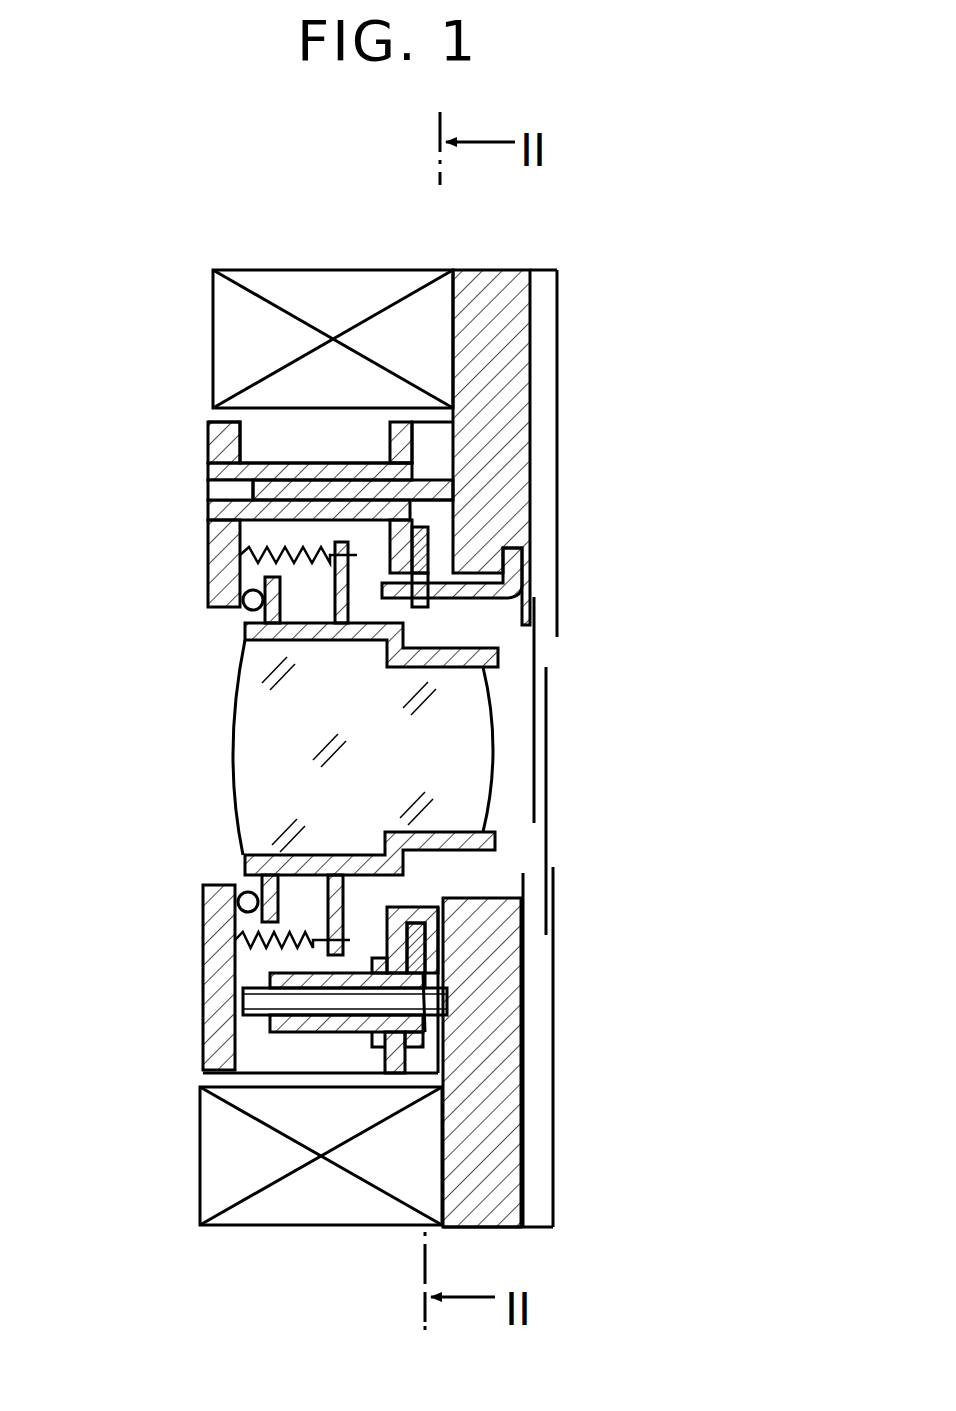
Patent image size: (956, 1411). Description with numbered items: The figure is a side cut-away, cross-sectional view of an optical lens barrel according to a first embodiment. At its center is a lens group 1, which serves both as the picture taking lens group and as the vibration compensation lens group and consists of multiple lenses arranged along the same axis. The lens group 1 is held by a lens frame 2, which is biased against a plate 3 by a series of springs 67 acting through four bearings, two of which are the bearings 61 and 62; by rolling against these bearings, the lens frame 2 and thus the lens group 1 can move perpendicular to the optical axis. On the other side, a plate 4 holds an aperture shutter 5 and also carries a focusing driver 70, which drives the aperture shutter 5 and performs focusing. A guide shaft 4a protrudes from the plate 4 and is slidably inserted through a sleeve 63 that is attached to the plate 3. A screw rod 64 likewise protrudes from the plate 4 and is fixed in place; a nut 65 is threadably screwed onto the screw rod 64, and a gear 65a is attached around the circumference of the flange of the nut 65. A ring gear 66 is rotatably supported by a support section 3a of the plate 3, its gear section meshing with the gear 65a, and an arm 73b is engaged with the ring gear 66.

The lens group 1 is at (253, 752).
The lens frame 2 is at (247, 868).
The plate 3 is at (202, 1028).
The support section 3a is at (437, 903).
The plate 4 is at (490, 285).
The guide shaft 4a is at (237, 490).
The aperture shutter 5 is at (558, 729).
The bearing 61 is at (245, 612).
The bearing 62 is at (243, 893).
The sleeve 63 is at (267, 488).
The screw rod 64 is at (255, 1015).
The nut 65 is at (277, 1037).
The gear 65a is at (420, 970).
The ring gear 66 is at (425, 945).
The springs 67 is at (262, 540).
The focusing driver 70 is at (350, 295).
The arm 73b is at (480, 603).